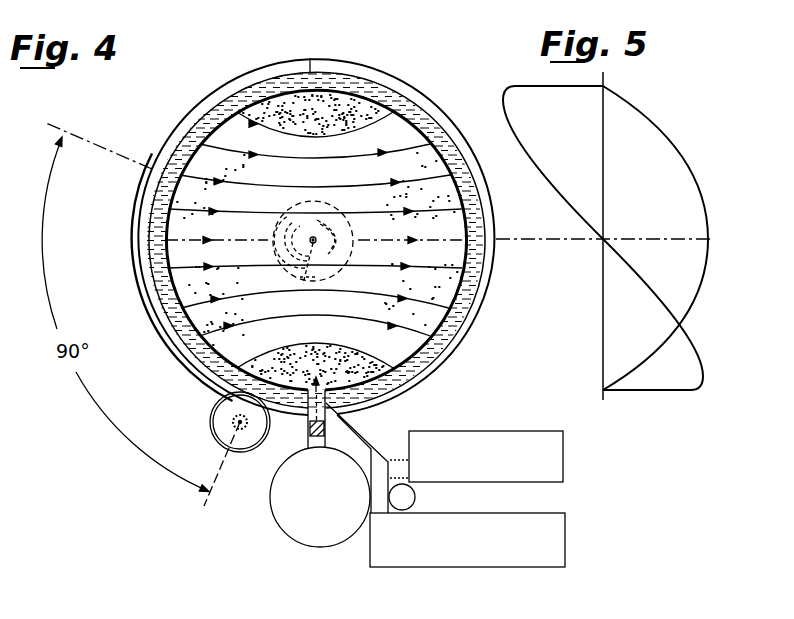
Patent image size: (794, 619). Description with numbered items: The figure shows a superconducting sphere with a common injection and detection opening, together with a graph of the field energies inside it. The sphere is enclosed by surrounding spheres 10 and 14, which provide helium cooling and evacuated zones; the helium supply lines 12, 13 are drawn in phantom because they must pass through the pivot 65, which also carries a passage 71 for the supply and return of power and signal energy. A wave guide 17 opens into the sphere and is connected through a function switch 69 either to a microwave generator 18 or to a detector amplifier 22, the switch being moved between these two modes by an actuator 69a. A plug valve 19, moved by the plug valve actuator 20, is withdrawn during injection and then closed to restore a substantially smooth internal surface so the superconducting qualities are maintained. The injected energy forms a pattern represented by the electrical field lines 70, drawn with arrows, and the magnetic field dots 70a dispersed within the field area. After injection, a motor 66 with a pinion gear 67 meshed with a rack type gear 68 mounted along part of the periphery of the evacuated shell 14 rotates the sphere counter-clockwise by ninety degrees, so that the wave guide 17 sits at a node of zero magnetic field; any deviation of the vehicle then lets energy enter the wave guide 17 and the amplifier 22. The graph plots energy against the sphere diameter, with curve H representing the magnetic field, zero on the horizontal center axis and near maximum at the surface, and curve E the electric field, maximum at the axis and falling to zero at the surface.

In FIG. 4, the surrounding sphere 10 is at (408, 102).
In FIG. 4, the helium supply line 12 is at (322, 277).
In FIG. 4, the helium supply line 13 is at (300, 283).
In FIG. 4, the evacuated shell 14 is at (197, 105).
In FIG. 4, the wave guide 17 is at (355, 436).
In FIG. 4, the microwave generator 18 is at (566, 541).
In FIG. 4, the plug valve 19 is at (307, 418).
In FIG. 4, the plug valve actuator 20 is at (271, 505).
In FIG. 4, the detector amplifier 22 is at (520, 431).
In FIG. 4, the pivot 65 is at (293, 210).
In FIG. 4, the motor 66 is at (224, 462).
In FIG. 4, the pinion gear 67 is at (212, 428).
In FIG. 4, the rack type gear 68 is at (178, 376).
In FIG. 4, the function switch 69 is at (392, 460).
In FIG. 4, the actuator 69a is at (533, 497).
In FIG. 4, the electrical field lines 70 is at (402, 325).
In FIG. 4, the magnetic field dots 70a is at (365, 170).
In FIG. 4, the passage 71 is at (343, 211).
In FIG. 5, the magnetic field curve H is at (539, 163).
In FIG. 5, the electric field curve E is at (660, 141).